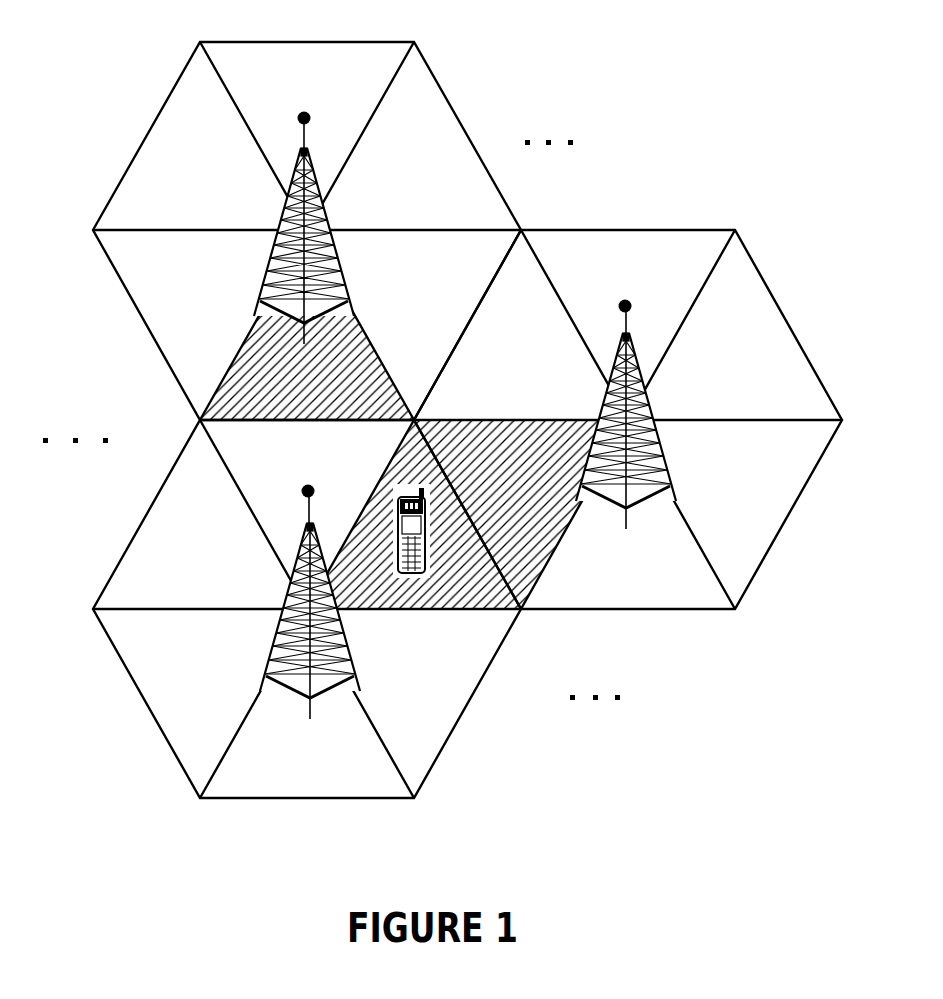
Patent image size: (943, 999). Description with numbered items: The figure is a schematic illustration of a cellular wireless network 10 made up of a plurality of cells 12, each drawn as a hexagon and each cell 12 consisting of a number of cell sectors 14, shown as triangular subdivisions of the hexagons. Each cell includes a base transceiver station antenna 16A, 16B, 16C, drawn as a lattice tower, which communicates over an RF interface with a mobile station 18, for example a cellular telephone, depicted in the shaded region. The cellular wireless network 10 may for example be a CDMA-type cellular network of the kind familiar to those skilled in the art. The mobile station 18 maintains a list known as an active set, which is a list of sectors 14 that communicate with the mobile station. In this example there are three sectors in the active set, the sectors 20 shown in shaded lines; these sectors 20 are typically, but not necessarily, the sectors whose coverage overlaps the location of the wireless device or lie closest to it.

The cellular wireless network 10 is at (640, 94).
The cell 12 is at (474, 155).
The cell sector 14 is at (773, 357).
The base transceiver station antenna 16A is at (632, 306).
The base transceiver station antenna 16B is at (315, 492).
The base transceiver station antenna 16C is at (312, 118).
The mobile station 18 is at (392, 577).
The active set sector 20 is at (343, 385).